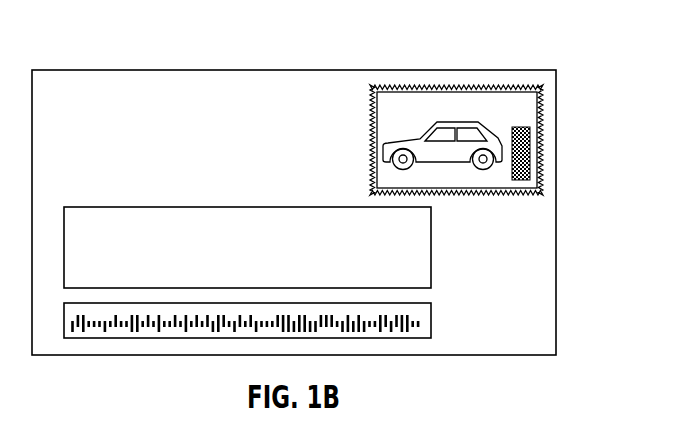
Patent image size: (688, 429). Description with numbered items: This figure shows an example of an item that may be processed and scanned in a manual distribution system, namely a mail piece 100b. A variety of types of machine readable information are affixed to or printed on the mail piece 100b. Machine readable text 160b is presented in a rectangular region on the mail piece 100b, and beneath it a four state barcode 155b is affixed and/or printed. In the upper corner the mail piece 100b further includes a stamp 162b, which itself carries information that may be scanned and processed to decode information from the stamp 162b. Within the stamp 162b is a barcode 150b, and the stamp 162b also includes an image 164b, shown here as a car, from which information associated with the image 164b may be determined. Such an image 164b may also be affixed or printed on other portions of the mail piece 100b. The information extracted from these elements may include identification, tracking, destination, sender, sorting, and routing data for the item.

The mail piece 100b is at (557, 193).
The barcode 150b is at (527, 144).
The four state barcode 155b is at (434, 320).
The machine readable text 160b is at (434, 248).
The stamp 162b is at (401, 86).
The image 164b is at (437, 122).